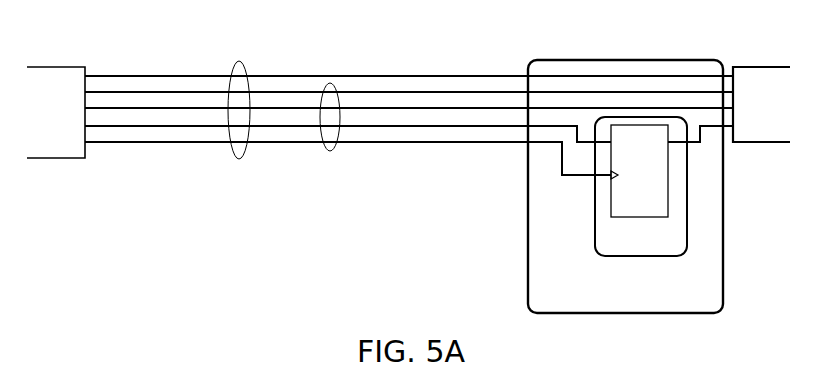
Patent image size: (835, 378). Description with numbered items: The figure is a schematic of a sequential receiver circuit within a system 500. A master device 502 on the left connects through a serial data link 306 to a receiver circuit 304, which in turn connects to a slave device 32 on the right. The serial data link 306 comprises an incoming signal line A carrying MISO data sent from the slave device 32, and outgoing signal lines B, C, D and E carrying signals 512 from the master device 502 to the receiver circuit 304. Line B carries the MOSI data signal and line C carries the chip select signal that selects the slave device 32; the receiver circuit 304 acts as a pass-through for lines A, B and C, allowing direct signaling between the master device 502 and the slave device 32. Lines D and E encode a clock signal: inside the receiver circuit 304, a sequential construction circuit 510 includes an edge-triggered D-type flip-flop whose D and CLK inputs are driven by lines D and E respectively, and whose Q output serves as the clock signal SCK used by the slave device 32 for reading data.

The system 500 is at (286, 285).
The master device 502 is at (60, 67).
The serial data link 306 is at (238, 61).
The signals 512 is at (330, 151).
The slave device 32 is at (768, 67).
The receiver circuit 304 is at (625, 186).
The sequential construction circuit 510 is at (680, 248).